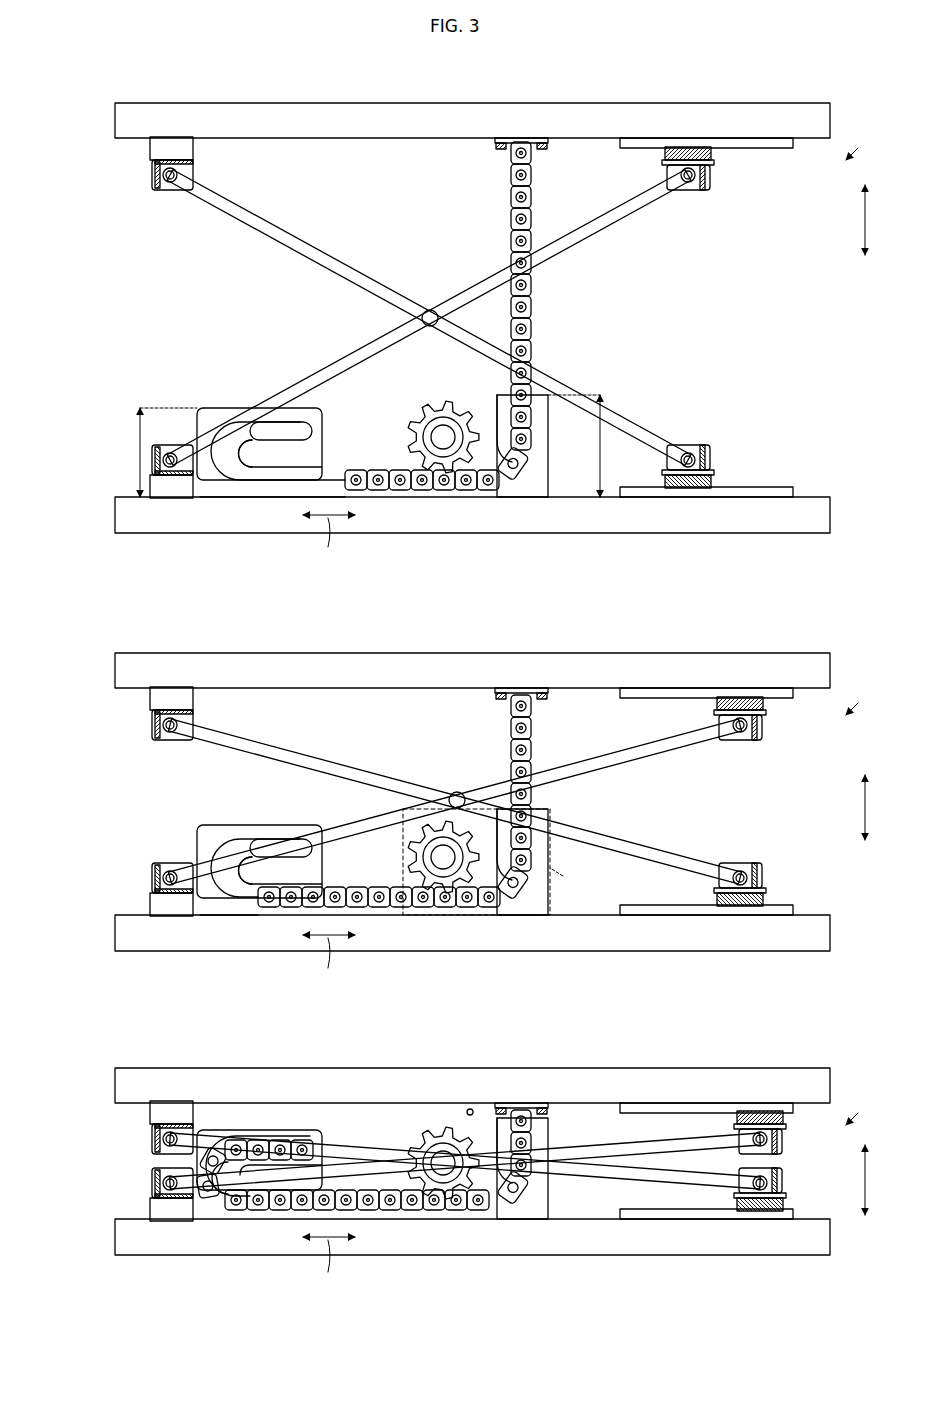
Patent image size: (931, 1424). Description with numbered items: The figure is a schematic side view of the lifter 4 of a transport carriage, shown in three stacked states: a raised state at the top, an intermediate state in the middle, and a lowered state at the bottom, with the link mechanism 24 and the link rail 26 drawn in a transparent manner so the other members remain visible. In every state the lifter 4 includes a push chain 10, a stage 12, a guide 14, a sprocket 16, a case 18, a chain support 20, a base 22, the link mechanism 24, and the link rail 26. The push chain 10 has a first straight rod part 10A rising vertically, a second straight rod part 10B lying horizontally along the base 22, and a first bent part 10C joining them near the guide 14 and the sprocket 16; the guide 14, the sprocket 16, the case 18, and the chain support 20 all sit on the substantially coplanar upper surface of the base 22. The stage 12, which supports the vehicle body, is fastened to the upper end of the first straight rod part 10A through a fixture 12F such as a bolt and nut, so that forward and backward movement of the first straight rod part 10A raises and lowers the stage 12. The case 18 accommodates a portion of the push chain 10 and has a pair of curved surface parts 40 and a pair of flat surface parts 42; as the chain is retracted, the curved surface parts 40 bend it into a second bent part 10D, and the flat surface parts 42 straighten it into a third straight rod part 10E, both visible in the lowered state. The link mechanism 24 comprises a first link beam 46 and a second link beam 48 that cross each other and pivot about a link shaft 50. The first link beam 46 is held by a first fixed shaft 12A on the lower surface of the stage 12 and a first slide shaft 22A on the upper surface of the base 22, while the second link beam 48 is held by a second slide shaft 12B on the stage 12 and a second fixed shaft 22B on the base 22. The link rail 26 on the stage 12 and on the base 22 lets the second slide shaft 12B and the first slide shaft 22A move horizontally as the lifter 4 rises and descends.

The lifter 4 is at (62, 90).
The push chain 10 is at (341, 717).
The first straight rod part 10A is at (535, 318).
The second straight rod part 10B is at (378, 490).
The first bent part 10C is at (512, 492).
The second bent part 10D is at (205, 1170).
The third straight rod part 10E is at (265, 1140).
The stage 12 is at (115, 121).
The first fixed shaft 12A is at (160, 176).
The second slide shaft 12B is at (712, 175).
The fixture 12F is at (500, 138).
The guide 14 is at (548, 478).
The sprocket 16 is at (412, 426).
The case 18 is at (197, 406).
The chain support 20 is at (288, 498).
The base 22 is at (115, 515).
The first slide shaft 22A is at (712, 460).
The second fixed shaft 22B is at (160, 461).
The link mechanism 24 is at (463, 730).
The link rail 26 is at (645, 142).
The curved surface parts 40 is at (222, 470).
The flat surface parts 42 is at (268, 424).
The first link beam 46 is at (327, 240).
The second link beam 48 is at (330, 350).
The link shaft 50 is at (430, 310).